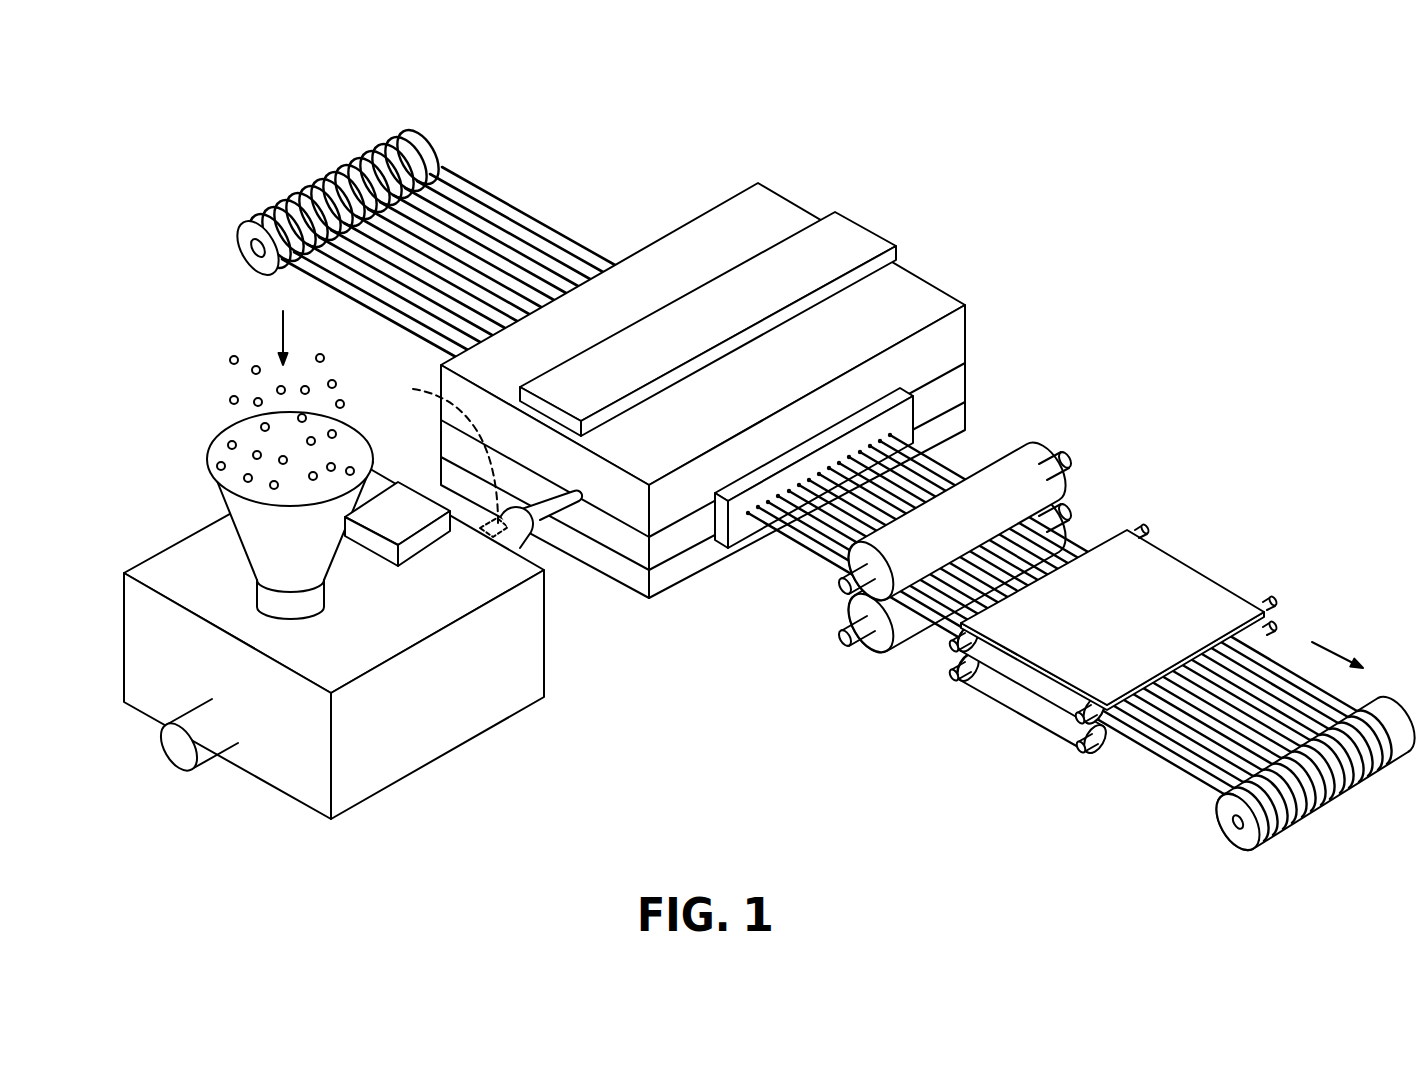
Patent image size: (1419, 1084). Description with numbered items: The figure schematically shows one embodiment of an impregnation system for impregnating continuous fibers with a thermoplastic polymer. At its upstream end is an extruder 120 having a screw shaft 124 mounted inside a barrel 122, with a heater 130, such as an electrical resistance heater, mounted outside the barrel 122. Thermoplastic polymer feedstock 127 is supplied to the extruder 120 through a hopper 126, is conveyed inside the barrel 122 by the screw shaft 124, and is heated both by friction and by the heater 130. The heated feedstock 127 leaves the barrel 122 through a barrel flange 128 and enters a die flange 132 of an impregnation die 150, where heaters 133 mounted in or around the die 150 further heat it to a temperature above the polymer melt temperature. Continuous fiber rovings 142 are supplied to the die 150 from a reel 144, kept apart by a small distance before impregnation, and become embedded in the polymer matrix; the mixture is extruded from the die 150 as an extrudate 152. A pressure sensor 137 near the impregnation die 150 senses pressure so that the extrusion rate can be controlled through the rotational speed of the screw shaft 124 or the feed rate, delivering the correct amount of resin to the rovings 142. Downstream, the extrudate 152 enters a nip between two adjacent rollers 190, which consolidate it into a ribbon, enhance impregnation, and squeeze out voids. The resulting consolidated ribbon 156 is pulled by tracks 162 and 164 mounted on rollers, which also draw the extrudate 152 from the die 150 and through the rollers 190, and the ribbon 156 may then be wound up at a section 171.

The extruder 120 is at (763, 509).
The barrel 122 is at (392, 761).
The screw shaft 124 is at (221, 737).
The hopper 126 is at (236, 503).
The thermoplastic polymer feedstock 127 is at (227, 399).
The barrel flange 128 is at (513, 540).
The heater 130 is at (424, 540).
The die flange 132 is at (563, 512).
The heaters 133 is at (847, 235).
The pressure sensor 137 is at (437, 454).
The continuous fiber rovings 142 is at (582, 220).
The reel 144 is at (233, 275).
The impregnation die 150 is at (703, 358).
The extrudate 152 is at (790, 554).
The consolidated ribbon 156 is at (937, 622).
The track 162 is at (1167, 573).
The track 164 is at (1028, 713).
The wind-up section 171 is at (1199, 808).
The rollers 190 is at (1025, 468).